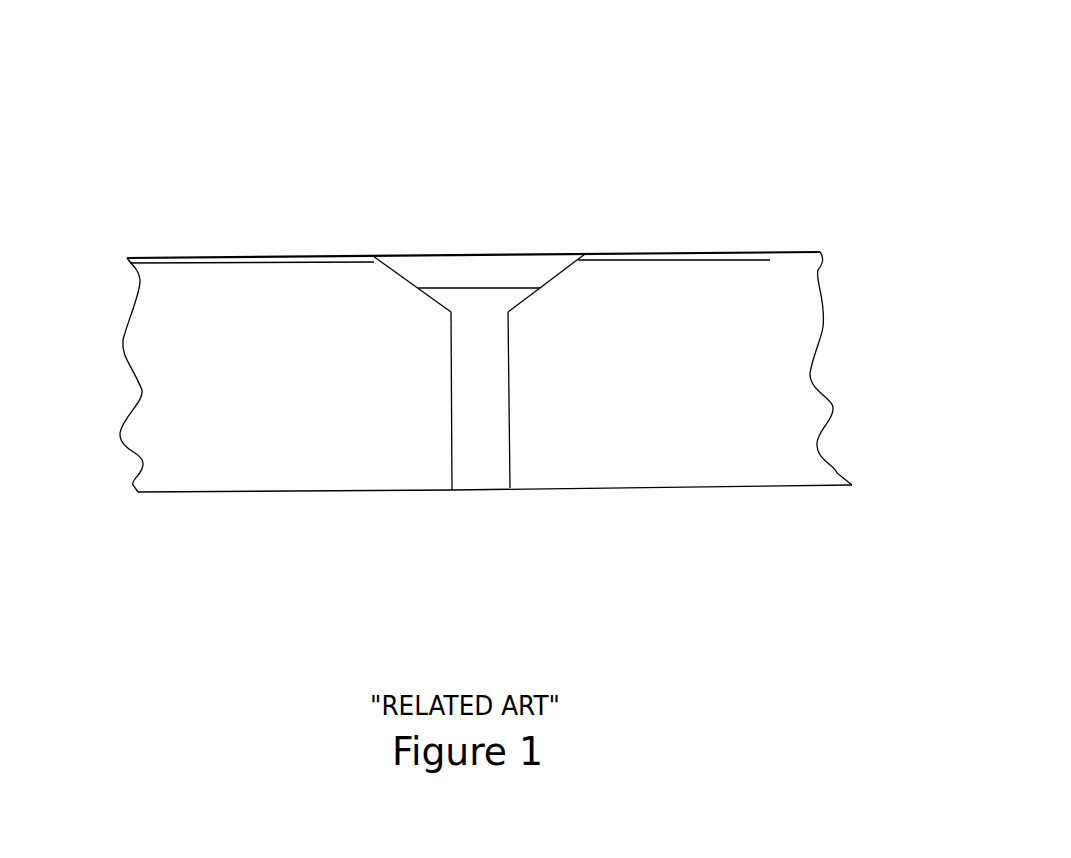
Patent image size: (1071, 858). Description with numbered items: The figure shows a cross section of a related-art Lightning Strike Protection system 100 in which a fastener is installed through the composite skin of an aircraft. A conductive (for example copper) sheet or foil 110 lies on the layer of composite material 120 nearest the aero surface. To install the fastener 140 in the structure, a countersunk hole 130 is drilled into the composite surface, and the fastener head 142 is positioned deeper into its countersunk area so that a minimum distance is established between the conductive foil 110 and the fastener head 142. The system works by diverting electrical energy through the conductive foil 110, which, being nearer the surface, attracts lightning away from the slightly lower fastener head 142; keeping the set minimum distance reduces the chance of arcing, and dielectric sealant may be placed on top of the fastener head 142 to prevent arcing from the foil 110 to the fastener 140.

The related art semiconductor structure 100 is at (465, 295).
The conductive foil 110 is at (473, 236).
The layer of composite material 120 is at (465, 372).
The countersunk hole 130 is at (479, 268).
The fastener 140 is at (511, 435).
The fastener head 142 is at (528, 235).